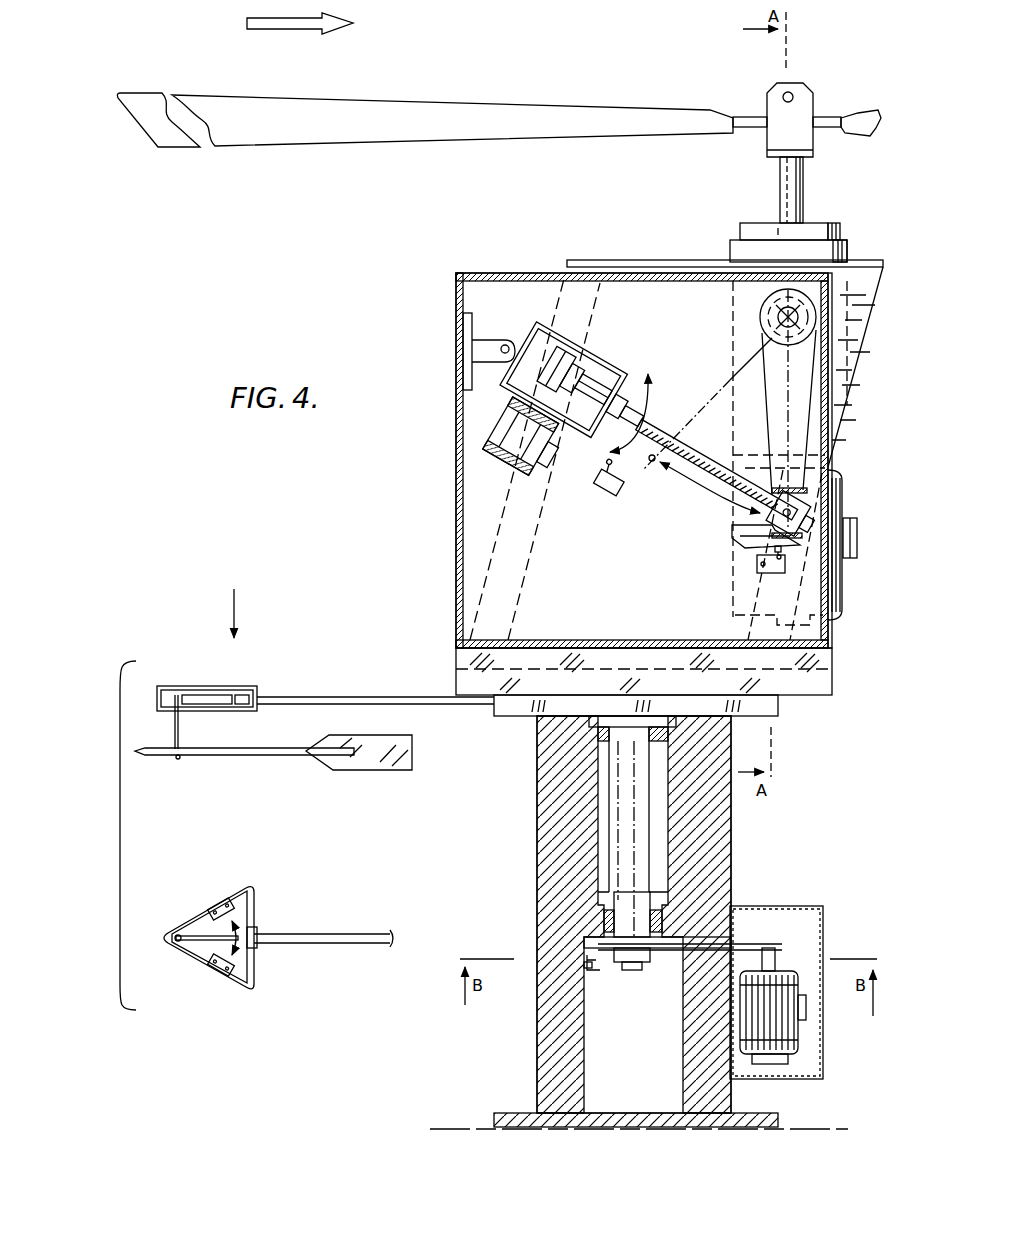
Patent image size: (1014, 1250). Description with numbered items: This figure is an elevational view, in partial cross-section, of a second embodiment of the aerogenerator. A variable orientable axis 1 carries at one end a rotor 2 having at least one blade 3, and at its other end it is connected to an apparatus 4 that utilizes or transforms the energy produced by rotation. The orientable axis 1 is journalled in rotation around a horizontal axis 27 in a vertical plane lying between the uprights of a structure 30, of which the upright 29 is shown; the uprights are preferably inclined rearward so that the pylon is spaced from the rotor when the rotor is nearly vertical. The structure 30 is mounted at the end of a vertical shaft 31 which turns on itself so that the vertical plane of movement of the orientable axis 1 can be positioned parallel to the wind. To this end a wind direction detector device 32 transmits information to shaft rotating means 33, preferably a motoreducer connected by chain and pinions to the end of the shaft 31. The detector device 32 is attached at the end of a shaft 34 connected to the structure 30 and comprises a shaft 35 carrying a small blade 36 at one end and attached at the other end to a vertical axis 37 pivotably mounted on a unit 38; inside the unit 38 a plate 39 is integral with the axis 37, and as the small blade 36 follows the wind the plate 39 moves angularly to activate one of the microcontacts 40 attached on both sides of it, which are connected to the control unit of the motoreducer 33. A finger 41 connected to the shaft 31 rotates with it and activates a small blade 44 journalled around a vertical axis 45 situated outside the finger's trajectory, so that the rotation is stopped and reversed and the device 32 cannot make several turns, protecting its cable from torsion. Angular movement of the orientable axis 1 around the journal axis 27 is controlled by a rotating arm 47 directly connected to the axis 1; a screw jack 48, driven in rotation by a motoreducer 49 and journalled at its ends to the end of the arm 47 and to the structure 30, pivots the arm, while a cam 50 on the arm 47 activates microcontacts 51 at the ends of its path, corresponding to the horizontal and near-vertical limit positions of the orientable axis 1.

The variable orientable axis 1 is at (740, 232).
The rotor 2 is at (825, 79).
The blade 3 is at (433, 133).
The apparatus 4 is at (849, 600).
The horizontal axis 27 is at (797, 323).
The vertical upright 29 is at (860, 283).
The structure 30 is at (840, 681).
The vertical shaft 31 is at (622, 811).
The wind direction detector device 32 is at (307, 812).
The shaft rotating means 33 is at (806, 950).
The shaft 34 is at (374, 695).
The shaft 35 is at (236, 755).
The small blade 36 is at (345, 763).
The vertical axis 37 is at (181, 731).
The unit 38 is at (229, 711).
The plate 39 is at (211, 697).
The microcontacts 40 is at (223, 897).
The finger 41 is at (606, 964).
The small blade 44 is at (590, 970).
The vertical axis 45 is at (598, 948).
The rotating arm 47 is at (776, 419).
The screw jack 48 is at (704, 482).
The motoreducer 49 is at (485, 425).
The cam 50 is at (750, 538).
The microcontacts 51 is at (612, 485).